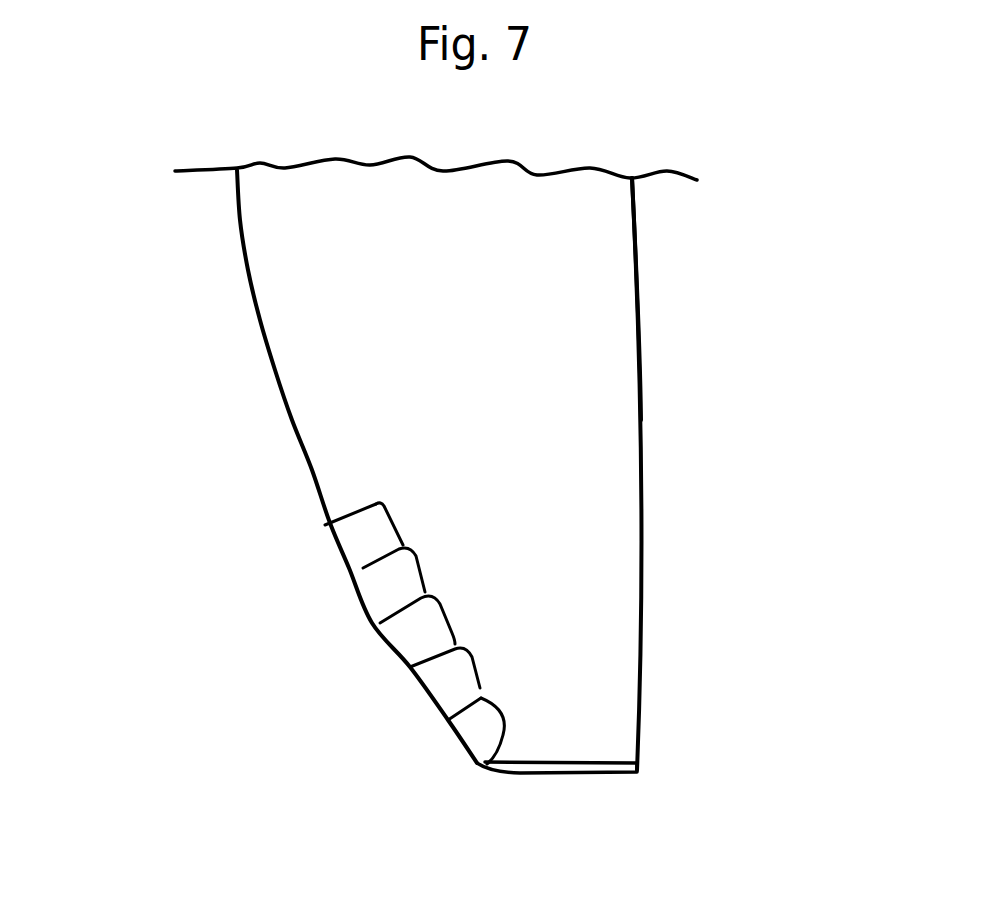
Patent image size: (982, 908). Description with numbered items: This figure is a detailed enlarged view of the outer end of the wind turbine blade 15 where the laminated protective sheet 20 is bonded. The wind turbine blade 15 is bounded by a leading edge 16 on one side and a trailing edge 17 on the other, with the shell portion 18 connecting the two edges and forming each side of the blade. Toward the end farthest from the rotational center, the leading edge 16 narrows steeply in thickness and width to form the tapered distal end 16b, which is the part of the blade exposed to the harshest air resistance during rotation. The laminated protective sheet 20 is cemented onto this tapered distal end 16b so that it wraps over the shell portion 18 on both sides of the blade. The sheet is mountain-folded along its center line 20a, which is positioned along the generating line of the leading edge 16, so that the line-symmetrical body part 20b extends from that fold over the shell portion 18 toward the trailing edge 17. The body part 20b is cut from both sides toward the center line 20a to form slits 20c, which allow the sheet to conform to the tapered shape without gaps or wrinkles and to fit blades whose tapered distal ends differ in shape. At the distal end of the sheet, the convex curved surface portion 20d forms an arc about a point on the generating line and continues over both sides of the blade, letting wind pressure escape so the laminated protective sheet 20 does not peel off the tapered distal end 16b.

The wind turbine blade 15 is at (606, 118).
The leading edge 16 is at (297, 460).
The tapered distal end 16b is at (443, 714).
The trailing edge 17 is at (642, 512).
The shell portion 18 is at (628, 338).
The laminated protective sheet 20 is at (465, 594).
The center line 20a is at (328, 528).
The body part 20b is at (387, 525).
The slits 20c is at (383, 565).
The convex curved surface portion 20d is at (503, 740).